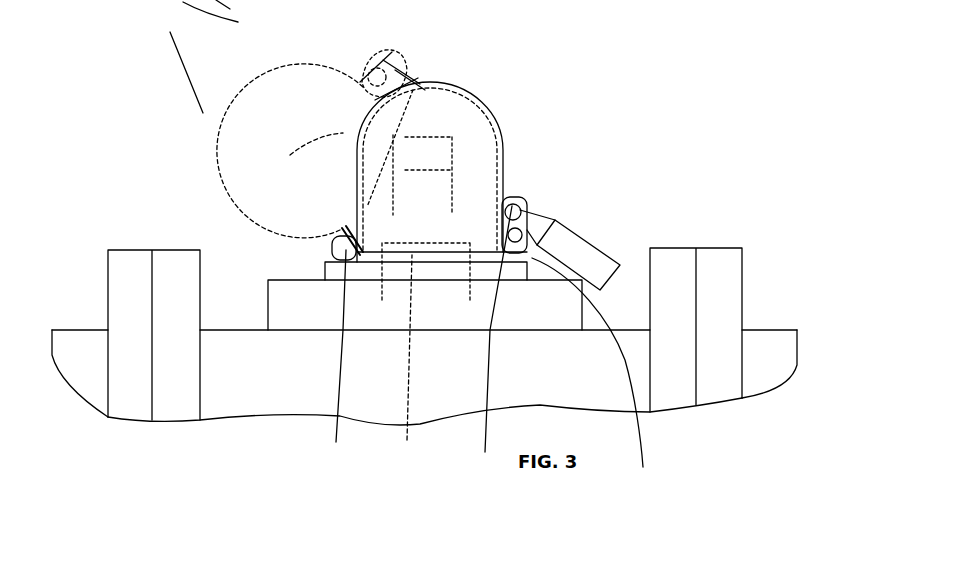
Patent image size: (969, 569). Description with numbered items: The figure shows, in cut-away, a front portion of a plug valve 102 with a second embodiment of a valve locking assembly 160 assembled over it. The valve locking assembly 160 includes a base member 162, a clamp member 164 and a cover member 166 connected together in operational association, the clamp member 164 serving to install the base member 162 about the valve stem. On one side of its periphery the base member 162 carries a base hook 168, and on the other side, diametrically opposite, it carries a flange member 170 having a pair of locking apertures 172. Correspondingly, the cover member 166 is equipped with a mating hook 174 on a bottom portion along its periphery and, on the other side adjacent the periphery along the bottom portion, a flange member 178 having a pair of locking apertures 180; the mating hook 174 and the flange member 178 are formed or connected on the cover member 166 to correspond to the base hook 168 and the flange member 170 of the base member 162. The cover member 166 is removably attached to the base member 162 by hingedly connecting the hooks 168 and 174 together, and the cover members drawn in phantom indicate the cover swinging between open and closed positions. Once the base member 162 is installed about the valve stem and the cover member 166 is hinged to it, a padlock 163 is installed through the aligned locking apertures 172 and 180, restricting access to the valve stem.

The valve 102 is at (690, 232).
The valve locking assembly 160 is at (440, 251).
The base member 162 is at (326, 280).
The padlock 163 is at (565, 240).
The clamp member 164 is at (418, 285).
The cover member 166 is at (302, 62).
The base hook 168 is at (337, 245).
The flange member 170 is at (597, 373).
The locking apertures 172 is at (517, 198).
The mating hook 174 is at (228, 30).
The flange member 178 is at (370, 58).
The locking apertures 180 is at (401, 64).